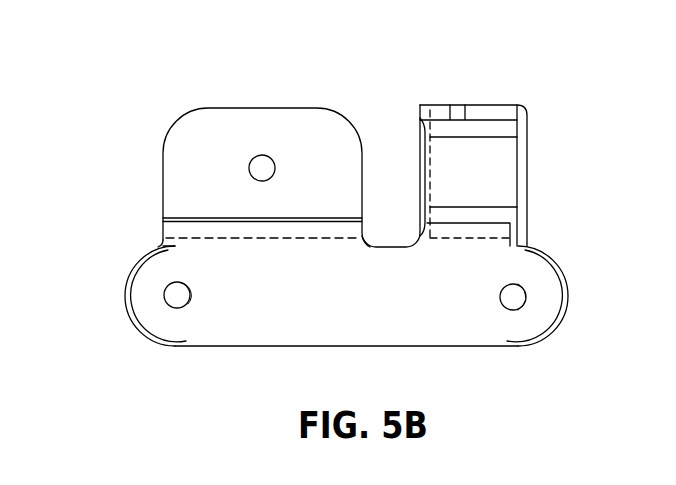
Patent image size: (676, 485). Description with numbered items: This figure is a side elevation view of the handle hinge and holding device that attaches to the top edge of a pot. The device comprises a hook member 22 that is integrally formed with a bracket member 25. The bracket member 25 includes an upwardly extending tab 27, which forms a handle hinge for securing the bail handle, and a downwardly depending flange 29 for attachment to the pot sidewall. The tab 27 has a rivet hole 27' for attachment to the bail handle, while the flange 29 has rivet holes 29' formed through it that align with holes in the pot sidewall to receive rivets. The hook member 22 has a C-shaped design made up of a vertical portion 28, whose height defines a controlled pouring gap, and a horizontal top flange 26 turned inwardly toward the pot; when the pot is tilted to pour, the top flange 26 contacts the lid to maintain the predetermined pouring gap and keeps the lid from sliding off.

The hook member 22 is at (535, 175).
The bracket member 25 is at (344, 107).
The horizontal top flange 26 is at (480, 110).
The upwardly extending tab 27 is at (240, 131).
The rivet hole 27' is at (185, 152).
The vertical portion 28 is at (510, 197).
The downwardly depending flange 29 is at (346, 325).
The rivet holes 29' is at (345, 334).